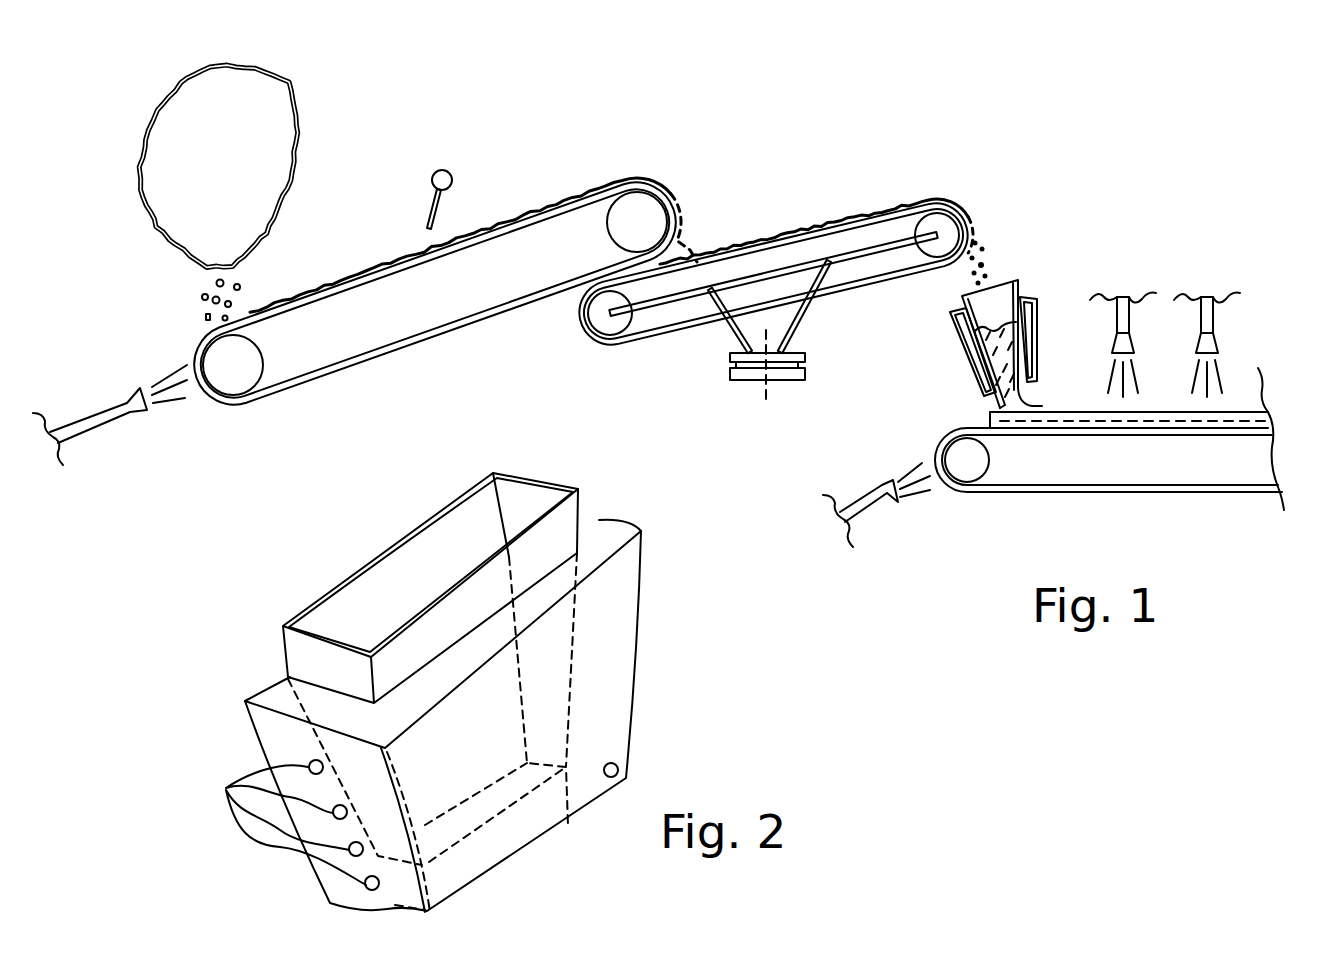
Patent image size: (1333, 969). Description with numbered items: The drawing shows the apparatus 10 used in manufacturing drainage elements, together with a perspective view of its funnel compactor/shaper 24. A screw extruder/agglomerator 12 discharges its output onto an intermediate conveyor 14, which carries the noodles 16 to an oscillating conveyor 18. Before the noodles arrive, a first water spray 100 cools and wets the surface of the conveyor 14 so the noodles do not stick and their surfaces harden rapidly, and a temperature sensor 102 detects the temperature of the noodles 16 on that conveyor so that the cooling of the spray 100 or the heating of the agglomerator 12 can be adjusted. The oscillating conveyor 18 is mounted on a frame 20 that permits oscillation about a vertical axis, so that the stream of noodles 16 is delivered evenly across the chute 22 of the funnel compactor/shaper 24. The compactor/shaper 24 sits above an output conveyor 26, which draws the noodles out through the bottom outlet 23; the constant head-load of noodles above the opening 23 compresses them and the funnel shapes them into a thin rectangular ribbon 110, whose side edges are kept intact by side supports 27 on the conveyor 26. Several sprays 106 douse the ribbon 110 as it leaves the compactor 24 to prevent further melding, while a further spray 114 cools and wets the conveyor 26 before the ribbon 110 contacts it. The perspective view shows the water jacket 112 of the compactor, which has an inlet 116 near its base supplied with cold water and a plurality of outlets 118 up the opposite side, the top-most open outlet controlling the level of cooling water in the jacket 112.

In FIG. 1, the apparatus 10 is at (905, 90).
In FIG. 1, the screw extruder/agglomerator 12 is at (293, 87).
In FIG. 1, the intermediate conveyor 14 is at (510, 235).
In FIG. 1, the noodles 16 is at (585, 183).
In FIG. 1, the oscillating conveyor 18 is at (872, 210).
In FIG. 1, the frame 20 is at (733, 346).
In FIG. 1, the chute 22 is at (1008, 280).
In FIG. 2, the chute 22 is at (517, 473).
In FIG. 1, the bottom outlet 23 is at (1035, 404).
In FIG. 2, the bottom outlet 23 is at (511, 854).
In FIG. 1, the funnel compactor/shaper 24 is at (1035, 262).
In FIG. 2, the funnel compactor/shaper 24 is at (582, 516).
In FIG. 1, the output conveyor 26 is at (1107, 433).
In FIG. 1, the side supports 27 is at (1202, 413).
In FIG. 1, the first water spray 100 is at (98, 427).
In FIG. 1, the temperature sensor 102 is at (440, 170).
In FIG. 1, the sprays 106 is at (1163, 322).
In FIG. 1, the ribbon 110 is at (1240, 410).
In FIG. 1, the water jacket 112 is at (967, 357).
In FIG. 2, the water jacket 112 is at (611, 632).
In FIG. 1, the spray 114 is at (870, 513).
In FIG. 2, the inlet 116 is at (620, 765).
In FIG. 2, the outlets 118 is at (282, 825).